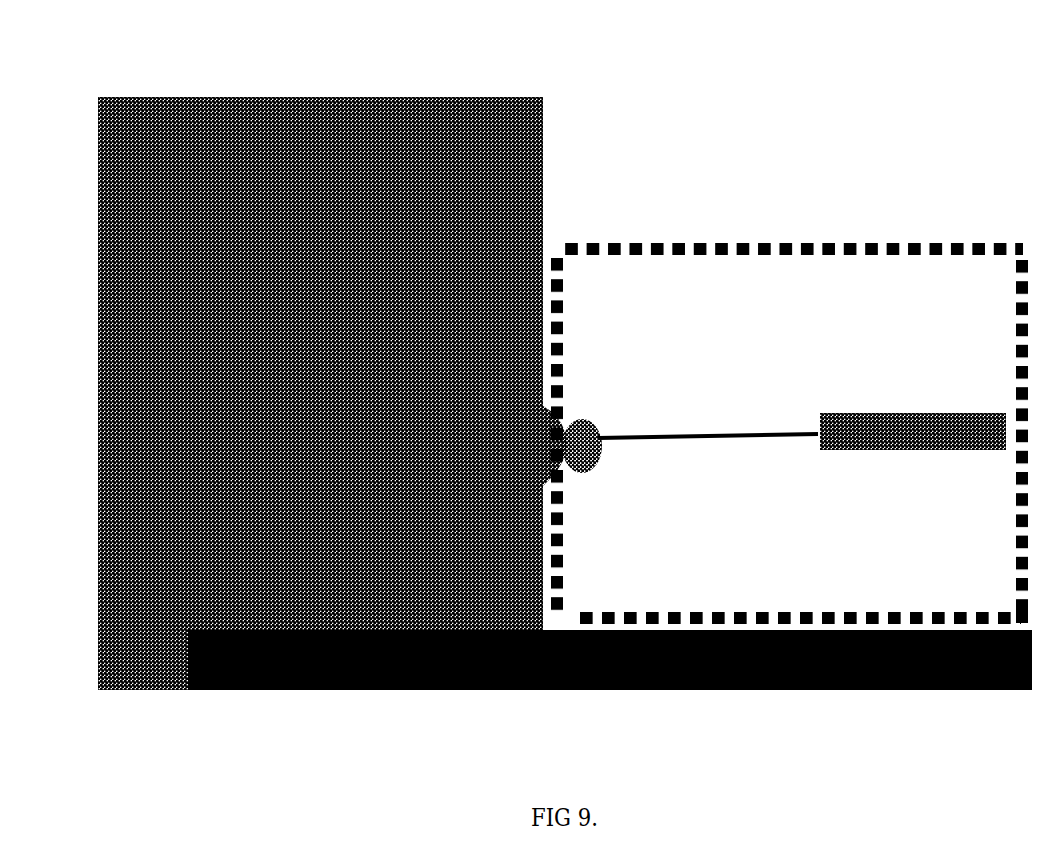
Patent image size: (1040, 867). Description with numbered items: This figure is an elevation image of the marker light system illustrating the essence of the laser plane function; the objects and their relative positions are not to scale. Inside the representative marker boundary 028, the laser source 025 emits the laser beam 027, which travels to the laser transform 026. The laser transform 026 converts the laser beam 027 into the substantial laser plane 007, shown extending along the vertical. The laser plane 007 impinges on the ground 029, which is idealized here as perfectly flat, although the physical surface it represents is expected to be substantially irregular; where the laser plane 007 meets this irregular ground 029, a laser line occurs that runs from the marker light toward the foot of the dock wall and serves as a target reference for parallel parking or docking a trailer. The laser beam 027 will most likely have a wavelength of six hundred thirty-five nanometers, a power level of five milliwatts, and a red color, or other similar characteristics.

The laser plane 007 is at (543, 170).
The laser source 025 is at (888, 457).
The laser transform 026 is at (585, 400).
The laser beam 027 is at (715, 412).
The representative marker boundary 028 is at (783, 223).
The ground 029 is at (808, 683).